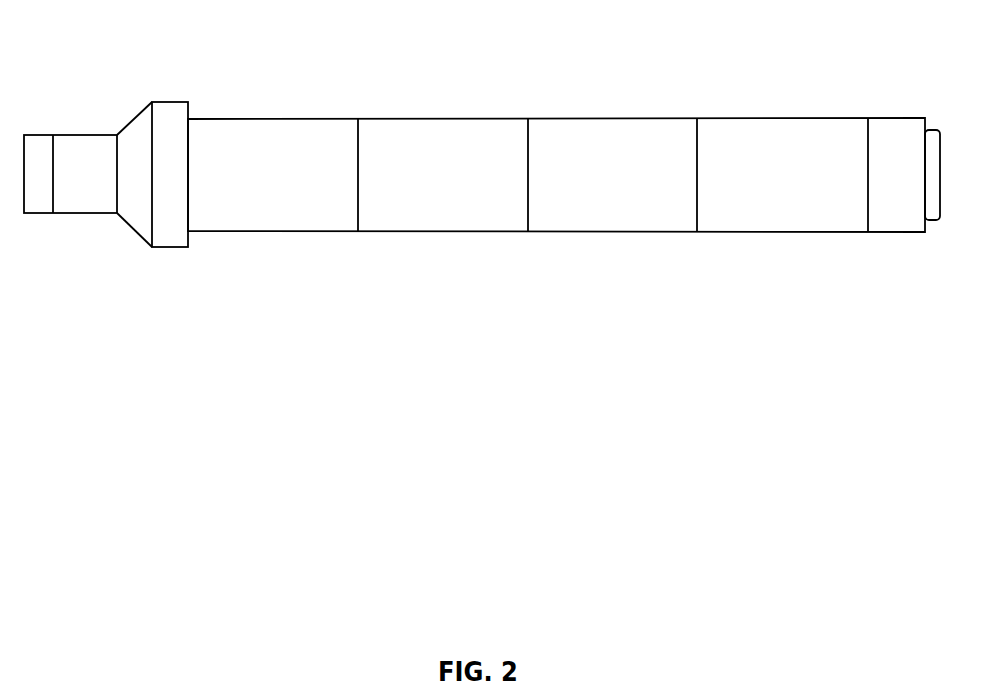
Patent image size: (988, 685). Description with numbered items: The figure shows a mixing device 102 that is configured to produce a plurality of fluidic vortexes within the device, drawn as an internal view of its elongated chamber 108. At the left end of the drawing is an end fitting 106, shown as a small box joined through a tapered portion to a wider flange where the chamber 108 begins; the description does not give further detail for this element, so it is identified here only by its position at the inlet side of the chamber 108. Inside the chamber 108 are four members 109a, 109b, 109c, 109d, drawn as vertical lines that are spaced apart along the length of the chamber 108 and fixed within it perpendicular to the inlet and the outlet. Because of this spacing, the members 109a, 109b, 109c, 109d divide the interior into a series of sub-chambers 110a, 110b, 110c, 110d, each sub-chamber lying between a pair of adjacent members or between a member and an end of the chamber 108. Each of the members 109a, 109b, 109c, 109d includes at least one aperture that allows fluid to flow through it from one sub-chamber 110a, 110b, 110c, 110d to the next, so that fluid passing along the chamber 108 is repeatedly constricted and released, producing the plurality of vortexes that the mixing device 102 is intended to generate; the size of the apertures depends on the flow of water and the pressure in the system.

The mixing device 102 is at (482, 159).
The connector / end fitting 106 is at (135, 231).
The chamber 108 is at (614, 118).
The member 109a is at (358, 232).
The member 109b is at (528, 232).
The member 109c is at (697, 232).
The member 109d is at (868, 232).
The sub-chamber 110a is at (267, 177).
The sub-chamber 110b is at (437, 175).
The sub-chamber 110c is at (608, 175).
The sub-chamber 110d is at (778, 175).